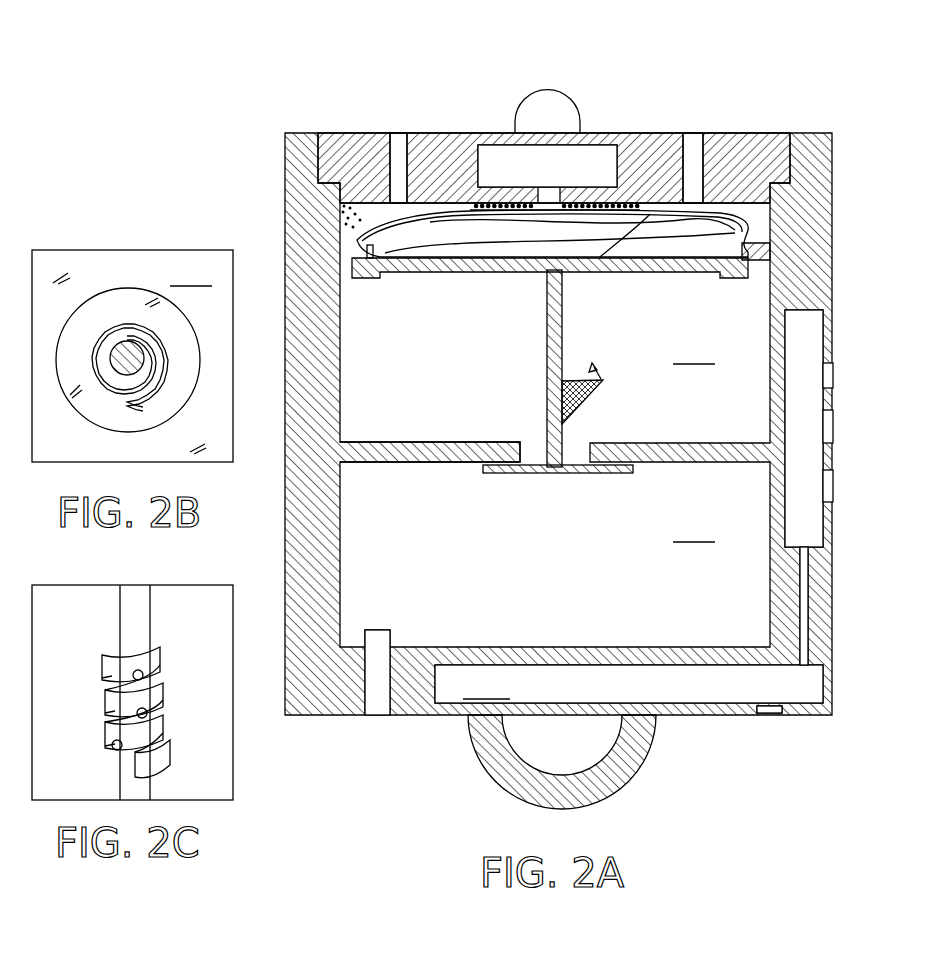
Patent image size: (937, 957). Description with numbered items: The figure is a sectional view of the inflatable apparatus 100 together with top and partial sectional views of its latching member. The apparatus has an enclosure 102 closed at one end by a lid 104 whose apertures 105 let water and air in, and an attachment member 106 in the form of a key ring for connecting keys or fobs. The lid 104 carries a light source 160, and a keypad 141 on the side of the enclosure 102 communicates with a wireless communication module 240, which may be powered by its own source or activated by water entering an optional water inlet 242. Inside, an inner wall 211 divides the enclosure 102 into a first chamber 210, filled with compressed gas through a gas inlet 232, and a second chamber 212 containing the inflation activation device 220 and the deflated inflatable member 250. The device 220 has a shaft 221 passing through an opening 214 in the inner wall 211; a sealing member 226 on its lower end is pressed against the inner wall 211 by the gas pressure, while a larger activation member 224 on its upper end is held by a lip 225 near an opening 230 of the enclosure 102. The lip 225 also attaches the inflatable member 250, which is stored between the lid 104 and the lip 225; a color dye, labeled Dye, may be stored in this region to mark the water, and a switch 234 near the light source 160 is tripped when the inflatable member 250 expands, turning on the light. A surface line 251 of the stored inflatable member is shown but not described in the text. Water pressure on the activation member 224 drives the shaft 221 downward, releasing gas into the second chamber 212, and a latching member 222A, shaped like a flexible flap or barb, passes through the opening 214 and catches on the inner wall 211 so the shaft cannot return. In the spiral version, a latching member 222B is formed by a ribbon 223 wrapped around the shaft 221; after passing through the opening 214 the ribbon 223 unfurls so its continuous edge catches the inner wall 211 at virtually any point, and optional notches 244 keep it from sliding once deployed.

In FIG. 2A, the inflatable apparatus 100 is at (690, 62).
In FIG. 2A, the enclosure 102 is at (832, 295).
In FIG. 2A, the lid 104 is at (472, 133).
In FIG. 2A, the apertures 105 is at (398, 133).
In FIG. 2A, the attachment member 106 is at (640, 768).
In FIG. 2A, the keypad 141 is at (830, 428).
In FIG. 2A, the light source 160 is at (547, 90).
In FIG. 2A, the first chamber 210 is at (592, 540).
In FIG. 2A, the inner wall 211 is at (428, 464).
In FIG. 2B, the inner wall 211 is at (132, 358).
In FIG. 2A, the second chamber 212 is at (694, 352).
In FIG. 2A, the opening 214 is at (520, 440).
In FIG. 2B, the opening 214 is at (120, 430).
In FIG. 2A, the inflation activation device 220 is at (547, 347).
In FIG. 2B, the inflation activation device 220 is at (127, 338).
In FIG. 2C, the inflation activation device 220 is at (148, 630).
In FIG. 2A, the shaft 221 is at (547, 377).
In FIG. 2A, the latching member 222A is at (583, 398).
In FIG. 2B, the spiral latching member 222B is at (113, 318).
In FIG. 2C, the spiral latching member 222B is at (102, 662).
In FIG. 2B, the ribbon 223 is at (165, 372).
In FIG. 2C, the ribbon 223 is at (165, 697).
In FIG. 2A, the activation member 224 is at (493, 272).
In FIG. 2A, the lip 225 is at (347, 274).
In FIG. 2A, the sealing member 226 is at (530, 474).
In FIG. 2A, the opening 230 is at (775, 191).
In FIG. 2A, the gas inlet 232 is at (377, 630).
In FIG. 2A, the switch 234 is at (552, 200).
In FIG. 2A, the wireless communication module 240 is at (629, 684).
In FIG. 2A, the water inlet 242 is at (768, 716).
In FIG. 2C, the notches 244 is at (113, 750).
In FIG. 2A, the inflatable member 250 is at (382, 272).
In FIG. 2A, the lens surface 251 is at (640, 232).
In FIG. 2A, the color dye Dye is at (337, 207).